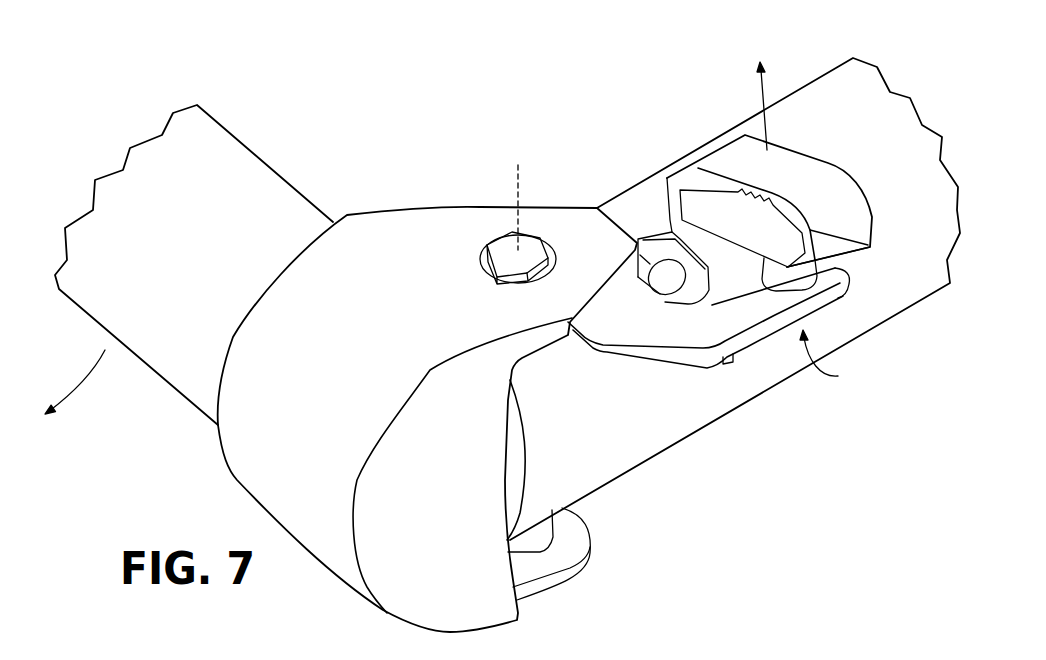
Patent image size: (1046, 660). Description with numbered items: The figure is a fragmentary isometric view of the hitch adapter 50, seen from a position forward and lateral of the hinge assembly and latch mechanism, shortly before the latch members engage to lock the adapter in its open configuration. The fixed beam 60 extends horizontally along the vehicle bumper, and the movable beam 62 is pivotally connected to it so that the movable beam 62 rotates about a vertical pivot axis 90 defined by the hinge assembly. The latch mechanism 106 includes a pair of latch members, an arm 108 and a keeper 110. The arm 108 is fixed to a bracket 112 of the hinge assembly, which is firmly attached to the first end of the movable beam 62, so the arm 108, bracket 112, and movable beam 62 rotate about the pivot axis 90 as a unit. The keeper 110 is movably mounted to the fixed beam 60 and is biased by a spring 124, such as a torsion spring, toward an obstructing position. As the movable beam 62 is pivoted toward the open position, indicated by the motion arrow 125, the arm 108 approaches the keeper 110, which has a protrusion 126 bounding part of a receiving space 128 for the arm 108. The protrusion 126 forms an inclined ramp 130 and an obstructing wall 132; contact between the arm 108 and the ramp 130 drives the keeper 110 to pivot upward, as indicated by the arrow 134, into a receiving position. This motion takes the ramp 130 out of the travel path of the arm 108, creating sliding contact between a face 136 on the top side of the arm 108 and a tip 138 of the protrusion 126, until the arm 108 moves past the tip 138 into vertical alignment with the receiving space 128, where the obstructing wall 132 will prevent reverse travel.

The hitch adapter 50 is at (390, 102).
The fixed beam 60 is at (700, 426).
The movable beam 62 is at (155, 378).
The pivot axis 90 is at (517, 187).
The latch mechanism 106 is at (842, 358).
The arm 108 is at (630, 360).
The keeper 110 is at (805, 147).
The bracket 112 is at (400, 208).
The spring 124 is at (662, 258).
The motion arrow 125 is at (77, 378).
The protrusion 126 is at (833, 289).
The receiving space 128 is at (733, 258).
The ramp 130 is at (850, 257).
The obstructing wall 132 is at (772, 288).
The arrow 134 is at (757, 97).
The face 136 is at (662, 338).
The tip 138 is at (775, 302).